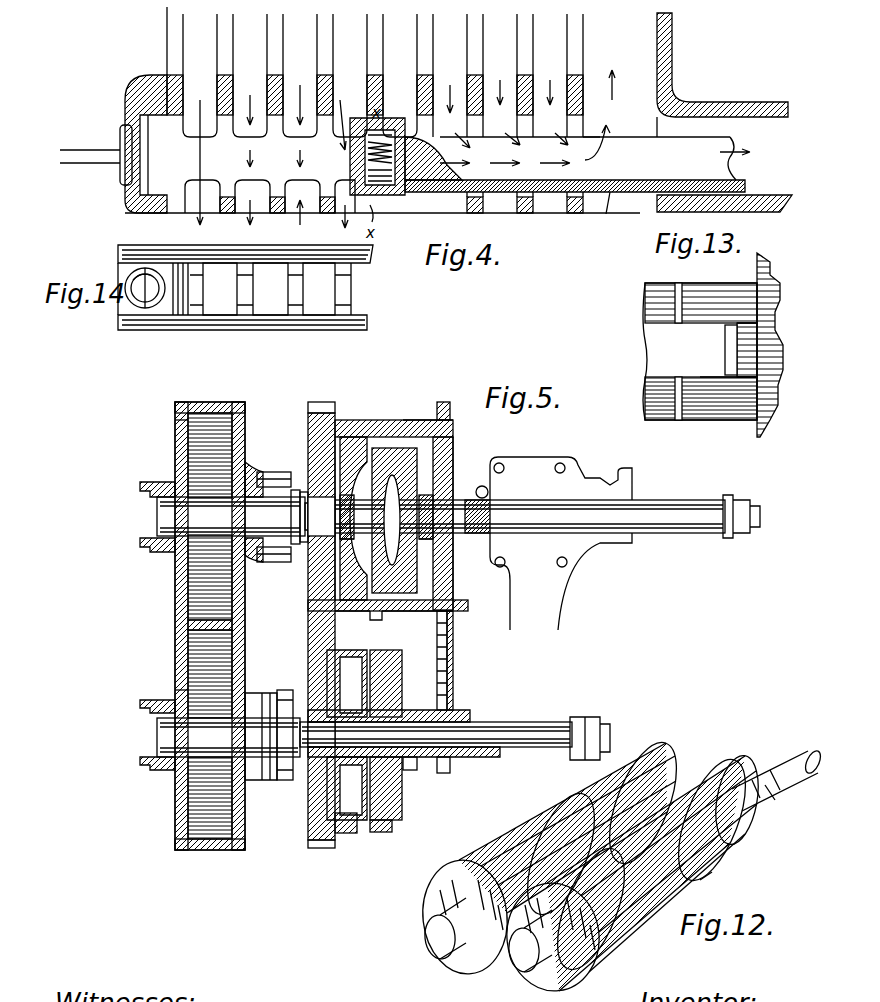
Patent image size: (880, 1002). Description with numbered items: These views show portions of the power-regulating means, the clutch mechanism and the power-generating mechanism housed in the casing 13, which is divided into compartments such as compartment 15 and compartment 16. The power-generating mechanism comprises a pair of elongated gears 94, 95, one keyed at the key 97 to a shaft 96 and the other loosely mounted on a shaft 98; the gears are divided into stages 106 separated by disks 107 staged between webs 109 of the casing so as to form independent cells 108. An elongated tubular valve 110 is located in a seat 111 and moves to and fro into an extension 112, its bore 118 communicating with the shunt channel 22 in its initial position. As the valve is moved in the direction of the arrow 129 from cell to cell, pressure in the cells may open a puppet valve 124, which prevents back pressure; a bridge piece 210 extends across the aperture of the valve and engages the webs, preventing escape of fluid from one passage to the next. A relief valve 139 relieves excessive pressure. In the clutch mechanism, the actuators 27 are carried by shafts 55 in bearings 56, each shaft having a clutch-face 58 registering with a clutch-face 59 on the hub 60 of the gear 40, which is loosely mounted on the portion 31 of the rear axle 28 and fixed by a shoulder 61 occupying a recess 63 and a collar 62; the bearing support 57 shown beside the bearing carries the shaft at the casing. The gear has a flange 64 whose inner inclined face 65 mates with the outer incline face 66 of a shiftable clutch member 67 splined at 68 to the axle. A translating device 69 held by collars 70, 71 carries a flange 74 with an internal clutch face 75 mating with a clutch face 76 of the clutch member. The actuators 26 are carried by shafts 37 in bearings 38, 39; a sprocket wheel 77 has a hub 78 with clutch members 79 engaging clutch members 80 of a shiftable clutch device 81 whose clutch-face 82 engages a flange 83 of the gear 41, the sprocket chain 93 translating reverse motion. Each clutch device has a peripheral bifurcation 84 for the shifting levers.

In FIG. 4, the casing 13 is at (672, 52).
In FIG. 5, the casing 13 is at (210, 402).
In FIG. 5, the compartment 15 is at (175, 690).
In FIG. 5, the compartment 16 is at (175, 422).
In FIG. 4, the channel 22 is at (600, 87).
In FIG. 5, the actuator 26 is at (210, 734).
In FIG. 5, the actuator 27 is at (210, 521).
In FIG. 5, the rear axle 28 is at (532, 507).
In FIG. 5, the axle portion 31 is at (585, 515).
In FIG. 5, the shaft 37 is at (493, 760).
In FIG. 5, the bearing 38 is at (268, 693).
In FIG. 5, the bearing 39 is at (522, 762).
In FIG. 13, the gear 40 is at (770, 298).
In FIG. 5, the gear 40 is at (320, 402).
In FIG. 5, the gear 41 is at (315, 848).
In FIG. 13, the shaft 55 is at (648, 333).
In FIG. 5, the shaft 55 is at (160, 515).
In FIG. 5, the bearing 56 is at (160, 482).
In FIG. 5, the bearing bracket 57 is at (210, 565).
In FIG. 13, the clutch-face 58 is at (678, 420).
In FIG. 5, the clutch-face 58 is at (275, 562).
In FIG. 13, the clutch-face 59 is at (733, 325).
In FIG. 5, the clutch-face 59 is at (275, 472).
In FIG. 13, the hub 60 is at (740, 420).
In FIG. 5, the hub 60 is at (293, 490).
In FIG. 5, the shoulder 61 is at (342, 539).
In FIG. 5, the collar 62 is at (348, 495).
In FIG. 5, the recess 63 is at (302, 543).
In FIG. 5, the flange 64 is at (330, 402).
In FIG. 5, the inner inclined face 65 is at (345, 445).
In FIG. 5, the outer incline face 66 is at (360, 437).
In FIG. 5, the shiftable clutch member 67 is at (392, 448).
In FIG. 5, the spline 68 is at (425, 495).
In FIG. 5, the translating device 69 is at (453, 450).
In FIG. 5, the collar 70 is at (420, 540).
In FIG. 5, the collar 71 is at (475, 535).
In FIG. 5, the flange 74 is at (445, 402).
In FIG. 5, the internal clutch face 75 is at (422, 420).
In FIG. 5, the clutch face 76 is at (417, 624).
In FIG. 5, the sprocket wheel 77 is at (445, 773).
In FIG. 5, the hub 78 is at (451, 705).
In FIG. 5, the clutch member 79 is at (412, 770).
In FIG. 5, the clutch member 80 is at (412, 710).
In FIG. 5, the shiftable clutch device 81 is at (398, 665).
In FIG. 5, the clutch-face 82 is at (372, 648).
In FIG. 5, the flange 83 is at (352, 833).
In FIG. 5, the peripheral bifurcation 84 is at (392, 830).
In FIG. 5, the sprocket chain 93 is at (447, 668).
In FIG. 12, the elongated gear 94 is at (632, 748).
In FIG. 12, the elongated gear 95 is at (702, 768).
In FIG. 12, the shaft 96 is at (795, 748).
In FIG. 12, the key 97 is at (756, 775).
In FIG. 12, the shaft 98 is at (436, 938).
In FIG. 12, the stage 106 is at (725, 883).
In FIG. 12, the disk 107 is at (745, 822).
In FIG. 4, the cell 108 is at (383, 75).
In FIG. 4, the web 109 is at (415, 18).
In FIG. 4, the tubular valve 110 is at (606, 214).
In FIG. 14, the tubular valve 110 is at (125, 250).
In FIG. 4, the seat 111 is at (382, 154).
In FIG. 4, the extension 112 is at (716, 108).
In FIG. 4, the bore 118 is at (577, 131).
In FIG. 4, the puppet valve 124 is at (385, 118).
In FIG. 14, the puppet valve 124 is at (128, 305).
In FIG. 4, the arrow 129 is at (748, 150).
In FIG. 4, the relief valve 139 is at (122, 140).
In FIG. 14, the bridge piece 210 is at (130, 280).